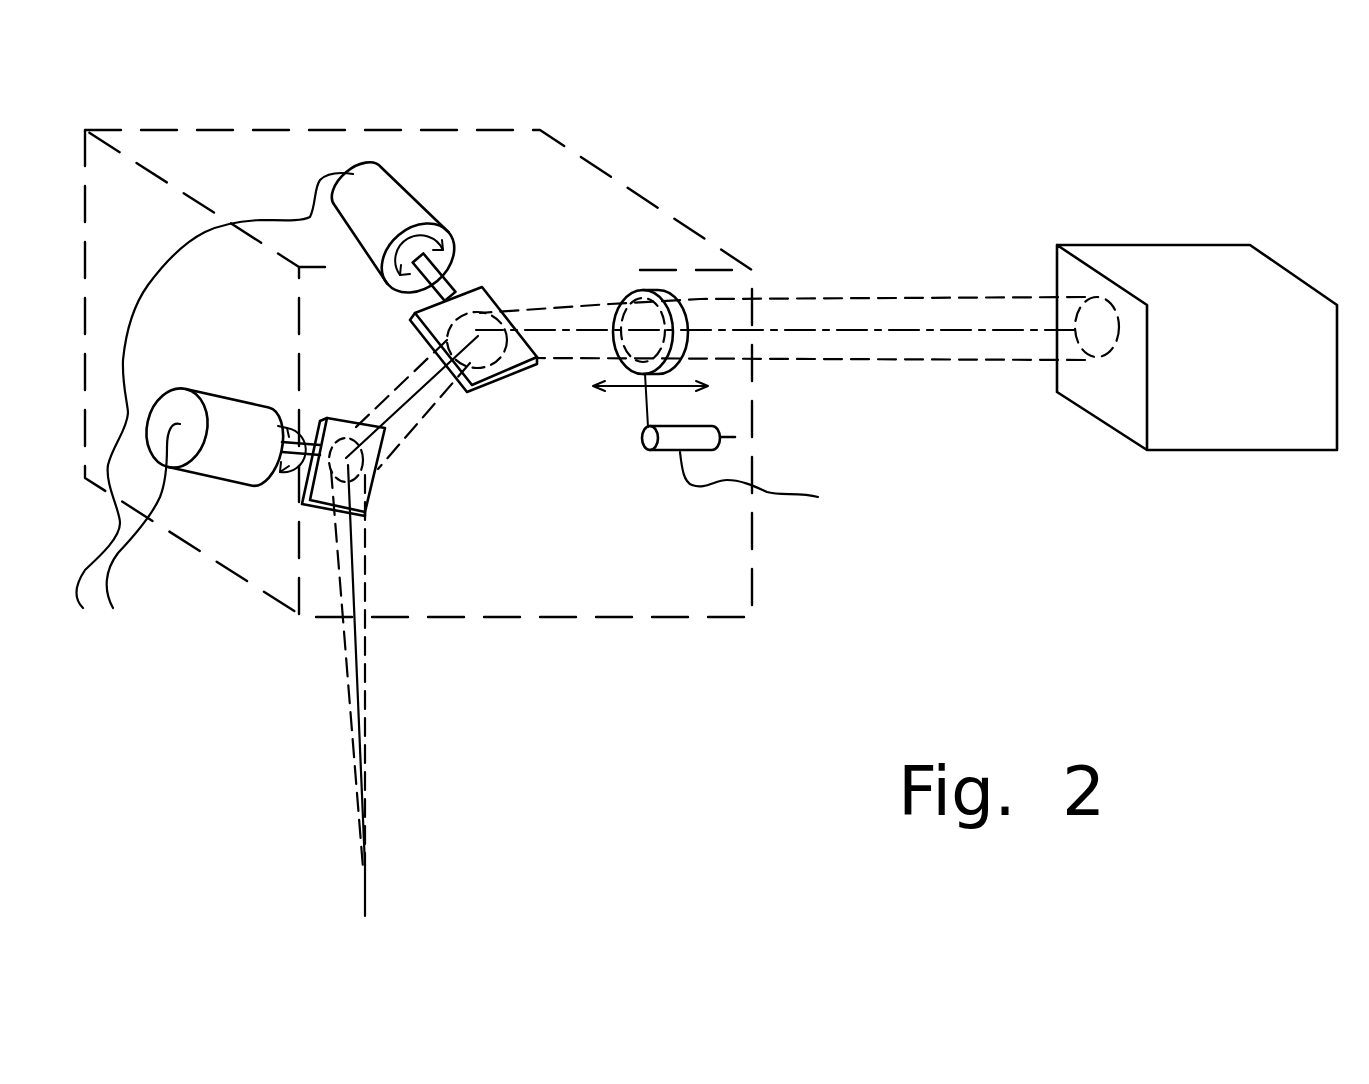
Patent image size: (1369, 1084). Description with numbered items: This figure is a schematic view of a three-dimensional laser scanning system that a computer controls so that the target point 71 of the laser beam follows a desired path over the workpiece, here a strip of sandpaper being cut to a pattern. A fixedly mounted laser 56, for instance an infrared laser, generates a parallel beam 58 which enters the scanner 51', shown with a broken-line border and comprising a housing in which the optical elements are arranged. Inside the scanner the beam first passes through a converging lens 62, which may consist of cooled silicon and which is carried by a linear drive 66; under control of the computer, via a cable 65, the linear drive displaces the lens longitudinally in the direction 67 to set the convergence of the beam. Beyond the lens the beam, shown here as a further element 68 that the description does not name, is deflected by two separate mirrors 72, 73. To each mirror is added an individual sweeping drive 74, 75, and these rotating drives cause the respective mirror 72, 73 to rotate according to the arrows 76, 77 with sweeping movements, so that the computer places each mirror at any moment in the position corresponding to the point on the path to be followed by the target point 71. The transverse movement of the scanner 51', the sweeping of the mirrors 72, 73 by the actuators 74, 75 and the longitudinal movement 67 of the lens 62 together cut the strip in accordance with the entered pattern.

The scanner 51' is at (418, 341).
The laser 56 is at (1163, 270).
The parallel beam 58 is at (867, 328).
The converging lens 62 is at (636, 289).
The cable 65 is at (98, 620).
The linear drive 66 is at (668, 442).
The direction of displacement 67 is at (637, 389).
The deflected laser beam 68 is at (538, 333).
The target point 71 is at (385, 698).
The first mirror 72 is at (503, 384).
The second mirror 73 is at (377, 469).
The sweeping drive for first mirror 74 is at (380, 178).
The sweeping drive for second mirror 75 is at (227, 420).
The rotation arrow of first mirror 76 is at (438, 229).
The rotation arrow of second mirror 77 is at (300, 433).